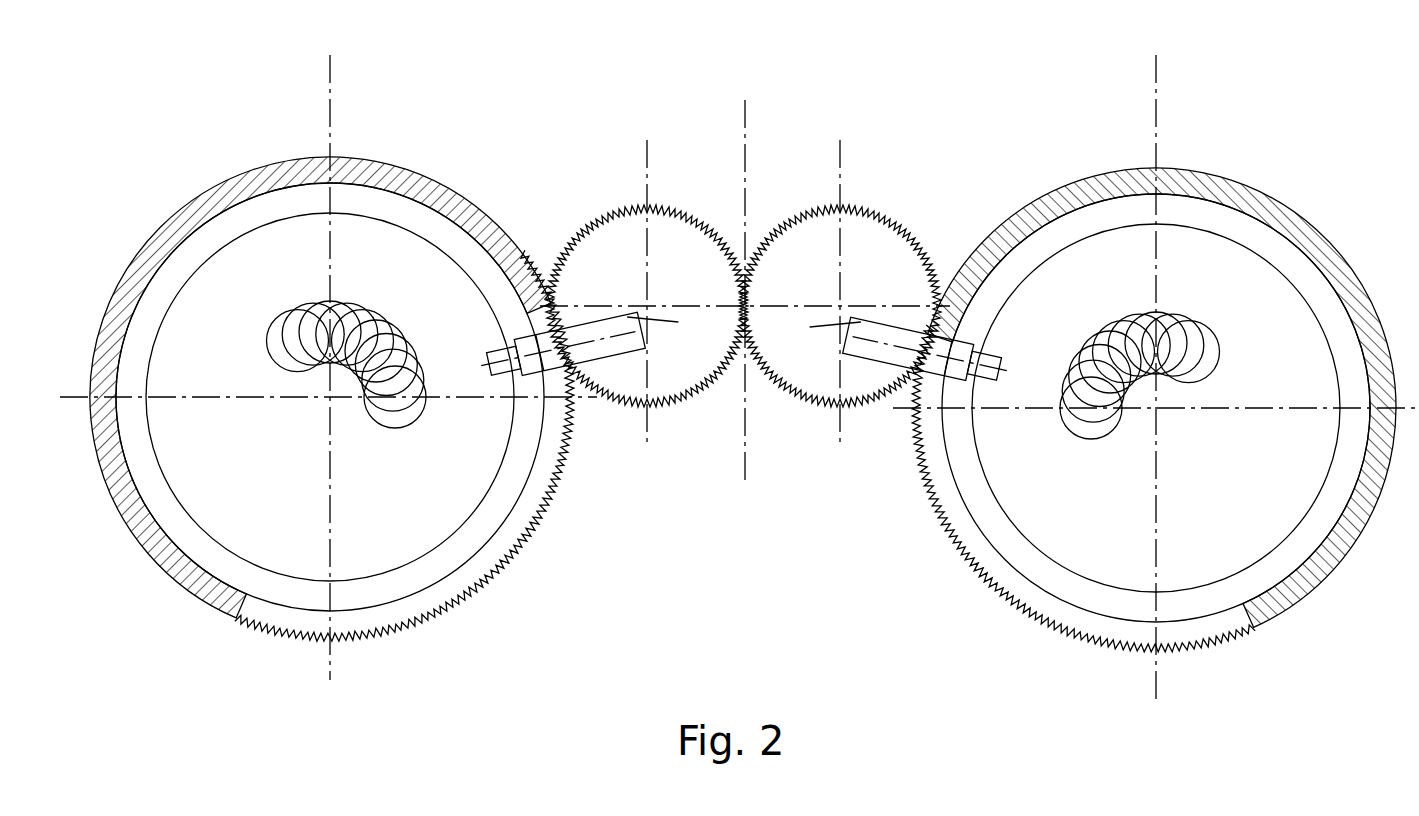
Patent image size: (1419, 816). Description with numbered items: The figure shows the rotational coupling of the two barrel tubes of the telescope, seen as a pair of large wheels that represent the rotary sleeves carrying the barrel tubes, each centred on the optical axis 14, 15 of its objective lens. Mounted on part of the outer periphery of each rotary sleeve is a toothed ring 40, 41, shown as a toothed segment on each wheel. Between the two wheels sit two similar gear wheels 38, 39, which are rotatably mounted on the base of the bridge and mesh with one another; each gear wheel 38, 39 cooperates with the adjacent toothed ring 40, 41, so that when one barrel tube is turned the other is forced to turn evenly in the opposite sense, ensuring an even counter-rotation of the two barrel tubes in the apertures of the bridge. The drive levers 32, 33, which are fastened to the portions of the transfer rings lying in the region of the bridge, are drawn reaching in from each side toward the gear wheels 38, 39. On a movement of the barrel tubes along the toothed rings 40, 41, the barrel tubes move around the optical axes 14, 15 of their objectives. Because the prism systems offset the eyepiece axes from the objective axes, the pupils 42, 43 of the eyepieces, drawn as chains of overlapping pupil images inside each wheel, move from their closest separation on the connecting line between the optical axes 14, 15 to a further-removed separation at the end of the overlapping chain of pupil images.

The optical axis of the objective lens 14 is at (330, 413).
The optical axis of the objective lens 15 is at (1157, 422).
The drive lever 32 is at (593, 350).
The drive lever 33 is at (890, 353).
The gear wheel 38 is at (612, 243).
The gear wheel 39 is at (875, 240).
The toothed ring 40 is at (540, 512).
The toothed ring 41 is at (945, 520).
The pupil of the eyepiece 42 is at (397, 418).
The pupil of the eyepiece 43 is at (1083, 428).